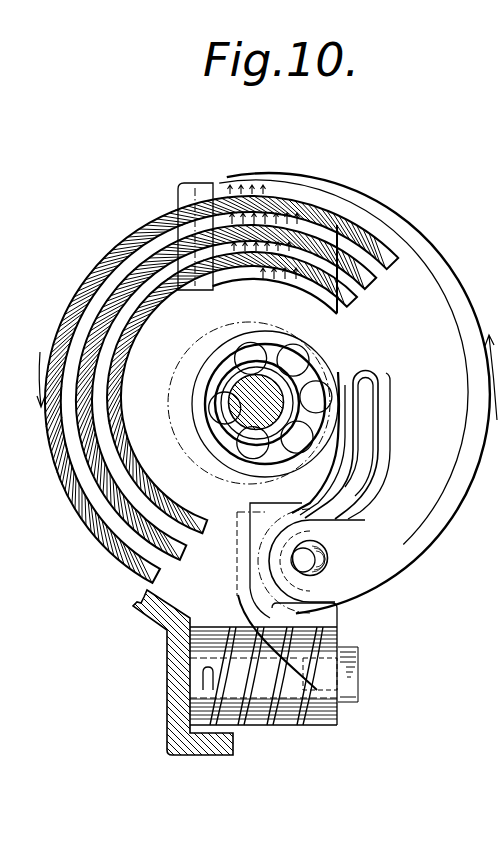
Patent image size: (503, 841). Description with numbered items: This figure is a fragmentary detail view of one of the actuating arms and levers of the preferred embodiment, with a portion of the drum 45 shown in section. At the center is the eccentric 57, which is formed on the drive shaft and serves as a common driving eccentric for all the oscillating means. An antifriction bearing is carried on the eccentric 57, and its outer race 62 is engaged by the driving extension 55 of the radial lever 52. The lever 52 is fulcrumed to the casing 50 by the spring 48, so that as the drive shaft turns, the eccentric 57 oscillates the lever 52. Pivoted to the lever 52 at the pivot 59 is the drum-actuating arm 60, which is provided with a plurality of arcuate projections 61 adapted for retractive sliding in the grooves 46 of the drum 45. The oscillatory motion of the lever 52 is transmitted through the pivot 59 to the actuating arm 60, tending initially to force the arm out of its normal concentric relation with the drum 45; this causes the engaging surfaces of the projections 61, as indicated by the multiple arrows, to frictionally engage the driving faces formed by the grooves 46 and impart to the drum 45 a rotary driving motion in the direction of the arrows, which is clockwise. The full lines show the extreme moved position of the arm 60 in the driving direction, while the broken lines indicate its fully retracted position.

The drum 45 is at (110, 259).
The grooves 46 is at (123, 312).
The spring 48 is at (283, 724).
The casing 50 is at (173, 684).
The radial lever 52 is at (297, 614).
The driving extension 55 is at (360, 402).
The eccentric 57 is at (298, 376).
The pivot 59 is at (326, 564).
The drum-actuating arm 60 is at (267, 393).
The arcuate projections 61 is at (214, 218).
The outer race 62 is at (334, 361).